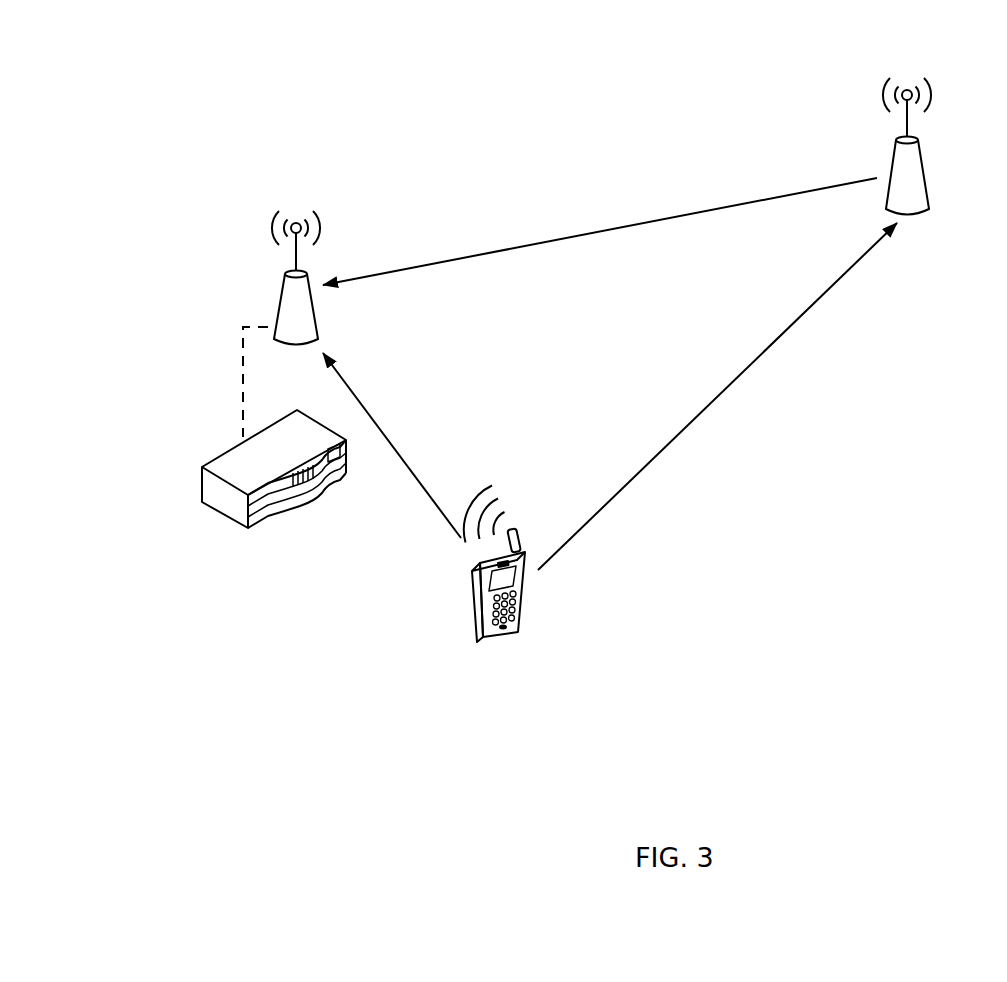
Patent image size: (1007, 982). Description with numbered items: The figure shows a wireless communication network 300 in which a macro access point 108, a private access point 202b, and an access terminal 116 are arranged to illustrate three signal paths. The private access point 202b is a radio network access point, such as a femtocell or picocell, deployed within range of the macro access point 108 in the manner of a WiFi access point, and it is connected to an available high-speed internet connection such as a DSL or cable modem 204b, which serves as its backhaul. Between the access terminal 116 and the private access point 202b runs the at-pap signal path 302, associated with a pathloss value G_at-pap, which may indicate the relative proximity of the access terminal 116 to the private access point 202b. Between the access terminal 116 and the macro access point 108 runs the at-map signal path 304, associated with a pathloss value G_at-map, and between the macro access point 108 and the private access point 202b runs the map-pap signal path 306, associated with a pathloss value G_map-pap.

The wireless communication network 300 is at (184, 86).
The macro access point 108 is at (928, 163).
The private access point 202b is at (278, 300).
The DSL or cable modem 204b is at (226, 456).
The access terminal 116 is at (523, 610).
The at-pap signal path 302 is at (378, 425).
The at-map signal path 304 is at (710, 412).
The map-pap signal path 306 is at (565, 237).